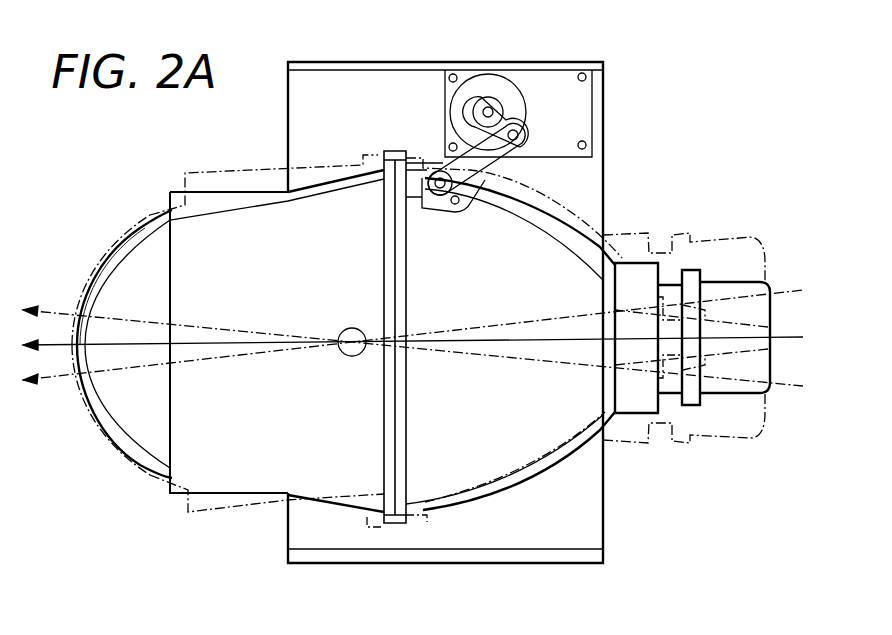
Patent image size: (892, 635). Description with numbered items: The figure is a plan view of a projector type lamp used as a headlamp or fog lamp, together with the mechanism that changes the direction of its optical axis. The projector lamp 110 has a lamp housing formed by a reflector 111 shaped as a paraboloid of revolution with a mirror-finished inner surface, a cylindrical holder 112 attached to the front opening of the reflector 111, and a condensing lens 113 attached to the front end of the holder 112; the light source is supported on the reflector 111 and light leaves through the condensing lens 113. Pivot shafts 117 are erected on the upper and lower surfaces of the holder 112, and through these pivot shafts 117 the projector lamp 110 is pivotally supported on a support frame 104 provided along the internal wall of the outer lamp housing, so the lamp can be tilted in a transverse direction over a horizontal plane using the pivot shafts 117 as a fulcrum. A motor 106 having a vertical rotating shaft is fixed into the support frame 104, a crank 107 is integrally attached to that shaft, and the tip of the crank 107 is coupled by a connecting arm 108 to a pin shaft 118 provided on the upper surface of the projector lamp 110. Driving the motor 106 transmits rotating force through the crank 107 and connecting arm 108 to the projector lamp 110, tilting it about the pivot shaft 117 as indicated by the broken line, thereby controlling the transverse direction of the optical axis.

The support frame 104 is at (413, 556).
The motor 106 is at (505, 98).
The crank 107 is at (520, 126).
The connecting arm 108 is at (522, 165).
The projector lamp 110 is at (218, 506).
The reflector 111 is at (497, 464).
The holder 112 is at (350, 493).
The condensing lens 113 is at (143, 442).
The pivot shaft 117 is at (350, 357).
The pin shaft 118 is at (440, 176).